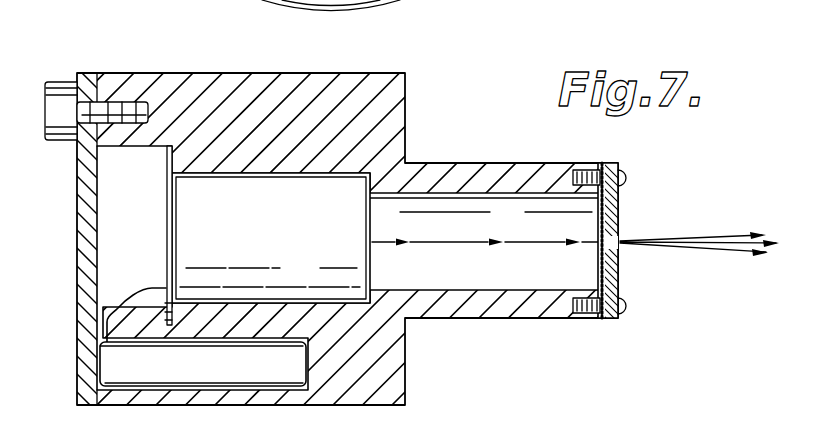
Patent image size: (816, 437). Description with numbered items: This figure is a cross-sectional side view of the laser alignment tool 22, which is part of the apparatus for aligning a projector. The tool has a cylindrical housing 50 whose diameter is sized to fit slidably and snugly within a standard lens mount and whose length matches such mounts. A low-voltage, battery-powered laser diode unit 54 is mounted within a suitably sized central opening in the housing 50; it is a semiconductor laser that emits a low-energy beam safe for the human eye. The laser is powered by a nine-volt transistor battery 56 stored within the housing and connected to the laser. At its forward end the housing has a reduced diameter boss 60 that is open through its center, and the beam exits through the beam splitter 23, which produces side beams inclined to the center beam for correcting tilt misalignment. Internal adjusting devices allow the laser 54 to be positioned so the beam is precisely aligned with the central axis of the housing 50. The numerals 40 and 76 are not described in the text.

The laser alignment tool 22 is at (170, 73).
The beam splitter 23 is at (612, 226).
The base 40 is at (39, 430).
The cylindrical housing 50 is at (338, 73).
The laser diode unit 54 is at (278, 241).
The transistor battery 56 is at (243, 367).
The reduced diameter boss 60 is at (445, 163).
The ring 76 is at (290, 0).